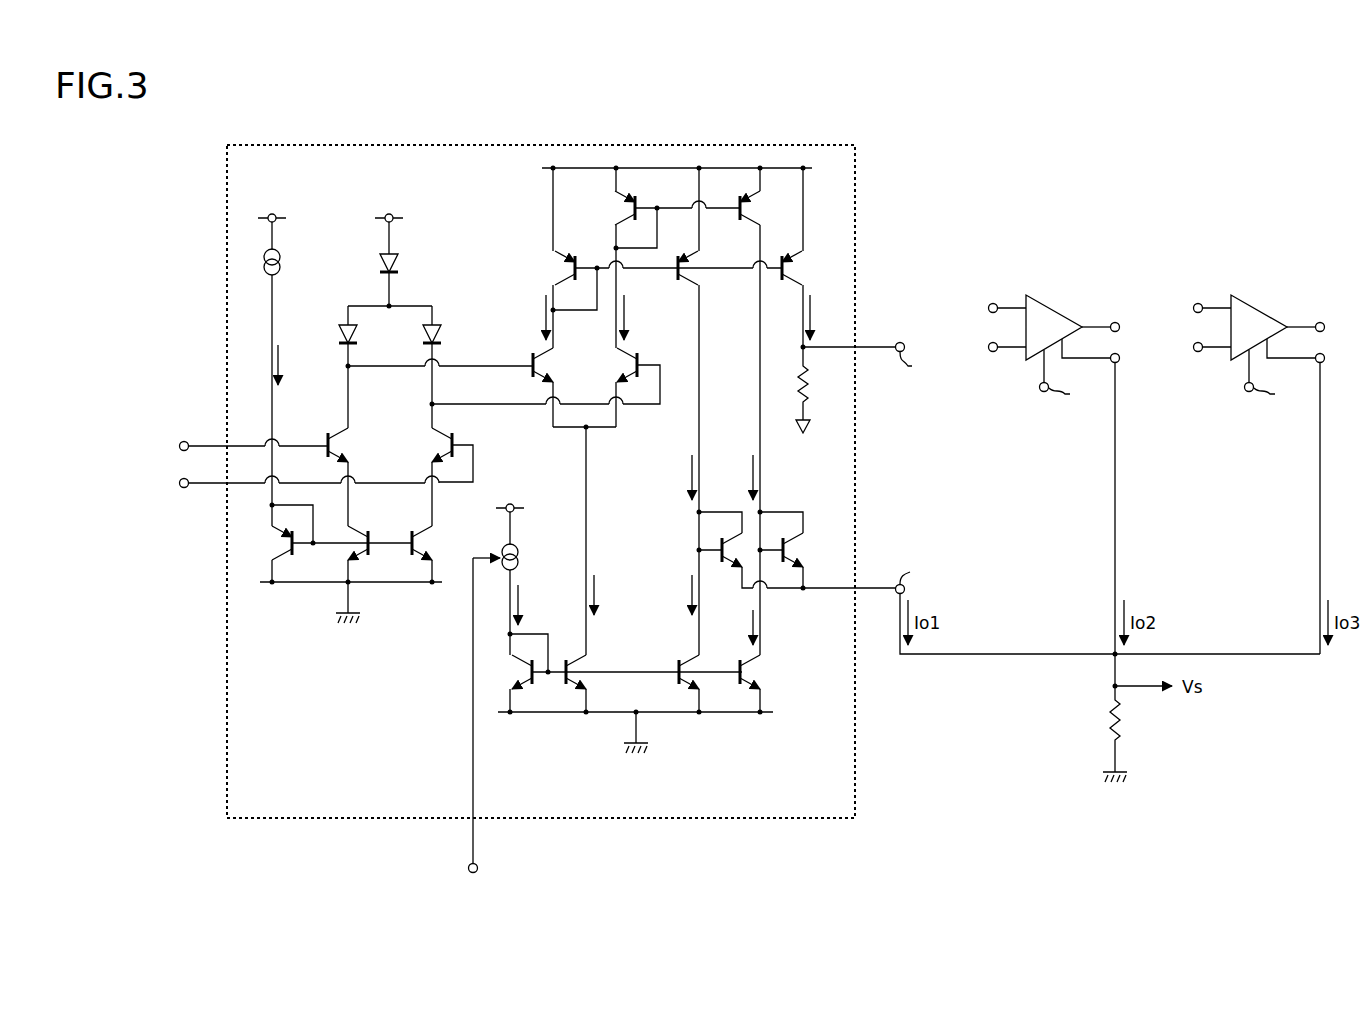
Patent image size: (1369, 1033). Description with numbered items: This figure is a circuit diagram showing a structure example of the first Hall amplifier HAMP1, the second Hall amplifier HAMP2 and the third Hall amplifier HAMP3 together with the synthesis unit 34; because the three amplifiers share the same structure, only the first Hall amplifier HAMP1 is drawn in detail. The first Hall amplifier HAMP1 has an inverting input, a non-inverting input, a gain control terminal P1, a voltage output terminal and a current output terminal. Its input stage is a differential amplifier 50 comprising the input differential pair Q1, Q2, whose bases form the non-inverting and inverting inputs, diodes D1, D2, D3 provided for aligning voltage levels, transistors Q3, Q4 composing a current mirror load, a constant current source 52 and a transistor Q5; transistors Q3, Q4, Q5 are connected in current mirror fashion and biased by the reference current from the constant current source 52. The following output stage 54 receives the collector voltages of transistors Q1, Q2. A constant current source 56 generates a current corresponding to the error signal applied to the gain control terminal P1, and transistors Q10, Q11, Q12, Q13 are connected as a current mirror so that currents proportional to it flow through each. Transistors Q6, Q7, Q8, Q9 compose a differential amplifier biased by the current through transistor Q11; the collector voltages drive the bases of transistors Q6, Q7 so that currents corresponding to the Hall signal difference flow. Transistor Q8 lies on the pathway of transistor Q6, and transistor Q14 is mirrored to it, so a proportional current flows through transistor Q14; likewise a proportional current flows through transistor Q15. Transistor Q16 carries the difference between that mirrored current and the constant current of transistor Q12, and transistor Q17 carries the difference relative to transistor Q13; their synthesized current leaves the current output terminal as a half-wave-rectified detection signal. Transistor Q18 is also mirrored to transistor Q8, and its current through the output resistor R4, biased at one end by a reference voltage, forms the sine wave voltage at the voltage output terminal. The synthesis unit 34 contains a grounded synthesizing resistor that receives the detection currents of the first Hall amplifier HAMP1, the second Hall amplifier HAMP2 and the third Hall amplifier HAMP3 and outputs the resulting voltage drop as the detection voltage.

The differential amplifier 50 is at (398, 444).
The constant current source 52 is at (280, 263).
The output stage 54 is at (637, 655).
The constant current source 56 is at (519, 556).
The synthesis unit 34 is at (1145, 734).
The first Hall amplifier HAMP1 is at (700, 818).
The second Hall amplifier HAMP2 is at (1050, 305).
The third Hall amplifier HAMP3 is at (1255, 305).
The gain control terminal P1 is at (478, 870).
The diode D1 is at (400, 263).
The diode D2 is at (358, 338).
The diode D3 is at (442, 338).
The output resistor R4 is at (815, 390).
The transistor Q1 is at (352, 414).
The transistor Q2 is at (442, 443).
The transistor Q3 is at (346, 522).
The transistor Q4 is at (436, 522).
The transistor Q5 is at (283, 543).
The transistor Q6 is at (556, 387).
The transistor Q7 is at (616, 387).
The transistor Q8 is at (606, 258).
The transistor Q9 is at (668, 258).
The transistor Q10 is at (506, 683).
The transistor Q11 is at (595, 683).
The transistor Q12 is at (678, 674).
The transistor Q13 is at (770, 683).
The transistor Q14 is at (730, 411).
The transistor Q15 is at (768, 411).
The transistor Q16 is at (726, 551).
The transistor Q17 is at (801, 550).
The transistor Q18 is at (812, 257).